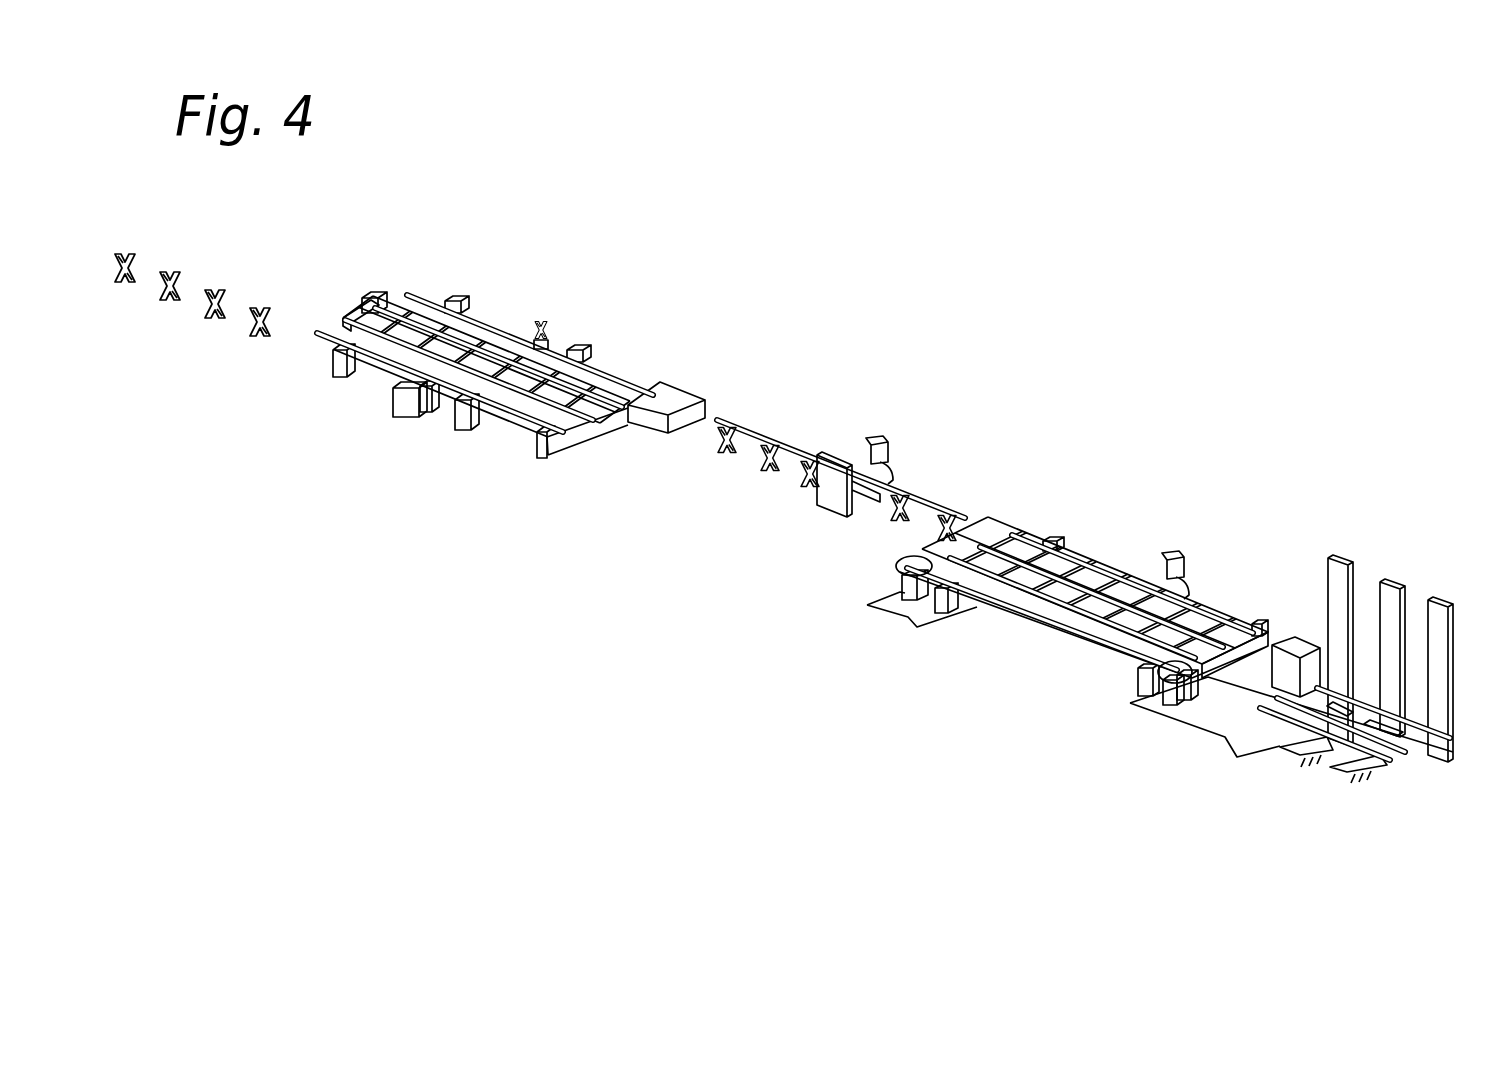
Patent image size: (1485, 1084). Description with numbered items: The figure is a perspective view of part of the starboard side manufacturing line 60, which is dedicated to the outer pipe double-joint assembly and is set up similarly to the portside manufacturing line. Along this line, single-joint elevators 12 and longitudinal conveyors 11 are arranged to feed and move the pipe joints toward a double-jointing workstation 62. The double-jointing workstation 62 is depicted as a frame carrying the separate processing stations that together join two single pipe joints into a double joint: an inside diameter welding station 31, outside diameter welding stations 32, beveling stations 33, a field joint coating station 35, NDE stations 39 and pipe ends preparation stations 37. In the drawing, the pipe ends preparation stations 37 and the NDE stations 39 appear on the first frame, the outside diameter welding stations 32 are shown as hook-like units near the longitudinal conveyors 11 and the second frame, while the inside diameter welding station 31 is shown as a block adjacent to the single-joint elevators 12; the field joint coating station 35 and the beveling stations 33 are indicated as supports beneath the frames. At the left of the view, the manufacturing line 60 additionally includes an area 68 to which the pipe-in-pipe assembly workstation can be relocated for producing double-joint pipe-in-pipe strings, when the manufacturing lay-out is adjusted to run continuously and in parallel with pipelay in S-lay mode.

The area 68 is at (220, 293).
The pipe ends preparation stations 37 is at (372, 292).
The NDE stations 39 is at (540, 324).
The starboard side manufacturing line 60 is at (660, 291).
The field joint coating station 35 is at (413, 405).
The double-jointing workstation 62 is at (568, 445).
The outside diameter welding stations 32 is at (882, 438).
The longitudinal conveyors 11 is at (952, 500).
The beveling stations 33 is at (897, 603).
The inside diameter welding station 31 is at (1292, 637).
The single-joint elevators 12 is at (1445, 600).